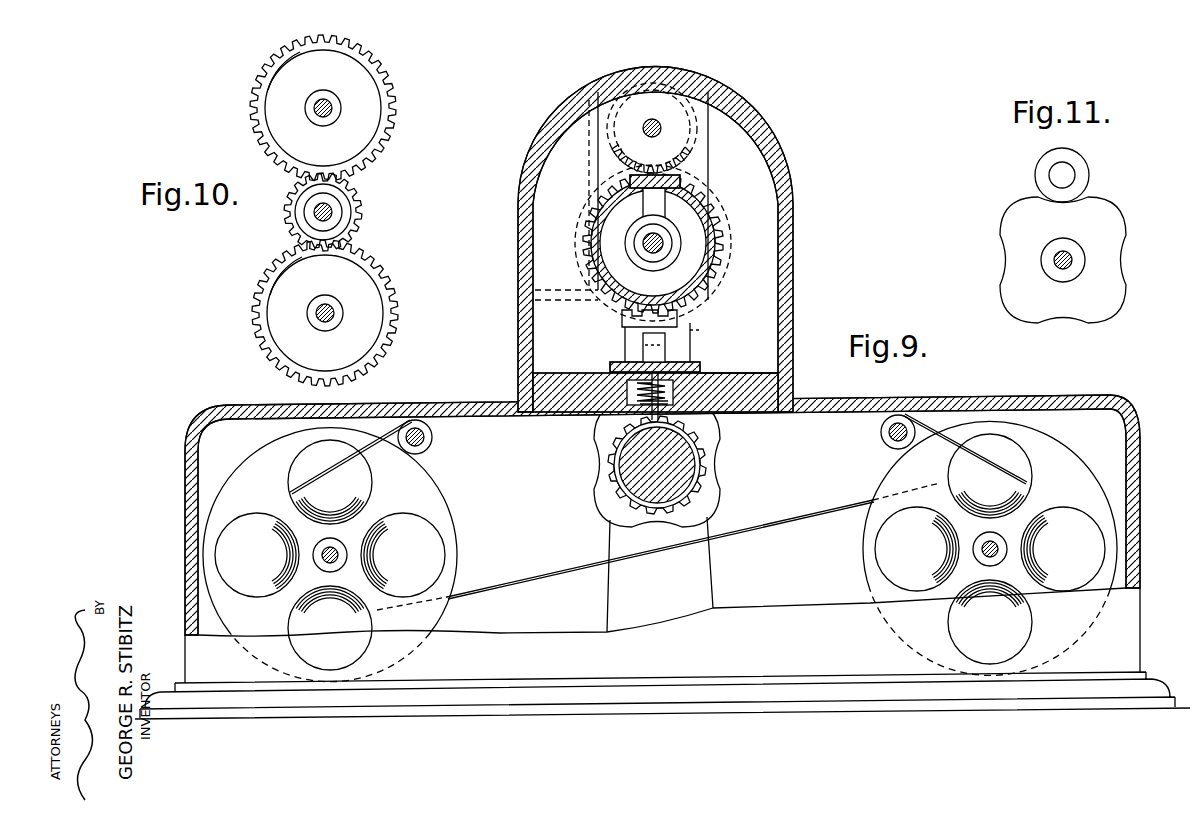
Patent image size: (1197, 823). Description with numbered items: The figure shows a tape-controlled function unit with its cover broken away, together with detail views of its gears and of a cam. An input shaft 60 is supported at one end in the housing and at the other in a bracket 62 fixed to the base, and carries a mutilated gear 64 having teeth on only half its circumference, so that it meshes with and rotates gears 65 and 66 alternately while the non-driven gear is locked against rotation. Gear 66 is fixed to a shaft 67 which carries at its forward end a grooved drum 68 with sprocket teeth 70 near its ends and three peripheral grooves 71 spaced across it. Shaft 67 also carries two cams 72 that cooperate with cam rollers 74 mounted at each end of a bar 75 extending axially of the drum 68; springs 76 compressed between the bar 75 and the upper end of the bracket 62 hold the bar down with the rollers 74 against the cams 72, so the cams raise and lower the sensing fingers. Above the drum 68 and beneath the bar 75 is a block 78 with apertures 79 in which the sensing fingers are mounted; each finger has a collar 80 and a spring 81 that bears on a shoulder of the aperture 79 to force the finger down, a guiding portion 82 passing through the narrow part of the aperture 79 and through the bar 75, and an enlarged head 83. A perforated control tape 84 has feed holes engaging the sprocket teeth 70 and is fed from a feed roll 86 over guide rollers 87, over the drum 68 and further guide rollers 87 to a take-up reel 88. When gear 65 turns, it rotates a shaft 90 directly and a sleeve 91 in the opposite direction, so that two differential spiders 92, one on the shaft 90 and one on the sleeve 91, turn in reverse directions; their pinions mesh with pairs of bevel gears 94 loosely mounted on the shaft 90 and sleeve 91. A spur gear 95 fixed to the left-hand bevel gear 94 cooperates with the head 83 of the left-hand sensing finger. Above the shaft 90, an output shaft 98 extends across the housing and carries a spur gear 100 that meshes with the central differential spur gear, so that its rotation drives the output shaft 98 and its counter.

In FIG. 10, the input shaft 60 is at (317, 212).
In FIG. 9, the bracket 62 is at (625, 352).
In FIG. 10, the mutilated gear 64 is at (360, 200).
In FIG. 10, the gear 65 is at (370, 110).
In FIG. 10, the gear 66 is at (370, 330).
In FIG. 10, the shaft 67 is at (337, 305).
In FIG. 11, the shaft 67 is at (1055, 262).
In FIG. 9, the grooved drum 68 is at (683, 478).
In FIG. 9, the sprocket teeth 70 is at (700, 447).
In FIG. 9, the peripheral grooves 71 is at (710, 469).
In FIG. 9, the cam 72 is at (607, 505).
In FIG. 11, the cam 72 is at (1107, 288).
In FIG. 9, the cam roller 74 is at (673, 355).
In FIG. 11, the cam roller 74 is at (1078, 185).
In FIG. 9, the bar 75 is at (697, 366).
In FIG. 9, the spring 76 is at (643, 325).
In FIG. 9, the block 78 is at (758, 392).
In FIG. 9, the aperture 79 is at (795, 365).
In FIG. 9, the collar 80 is at (610, 418).
In FIG. 9, the spring 81 is at (533, 382).
In FIG. 9, the guiding portion 82 is at (628, 370).
In FIG. 9, the enlarged head 83 is at (643, 340).
In FIG. 9, the control tape 84 is at (847, 412).
In FIG. 9, the feed roll 86 is at (252, 470).
In FIG. 9, the guide roller 87 is at (420, 452).
In FIG. 9, the take-up reel 88 is at (1060, 466).
In FIG. 9, the shaft 90 is at (667, 246).
In FIG. 9, the sleeve 91 is at (663, 243).
In FIG. 9, the differential spider 92 is at (655, 207).
In FIG. 9, the bevel gear 94 is at (600, 187).
In FIG. 9, the spur gear 95 is at (693, 210).
In FIG. 9, the output shaft 98 is at (643, 130).
In FIG. 9, the spur gear 100 is at (680, 145).